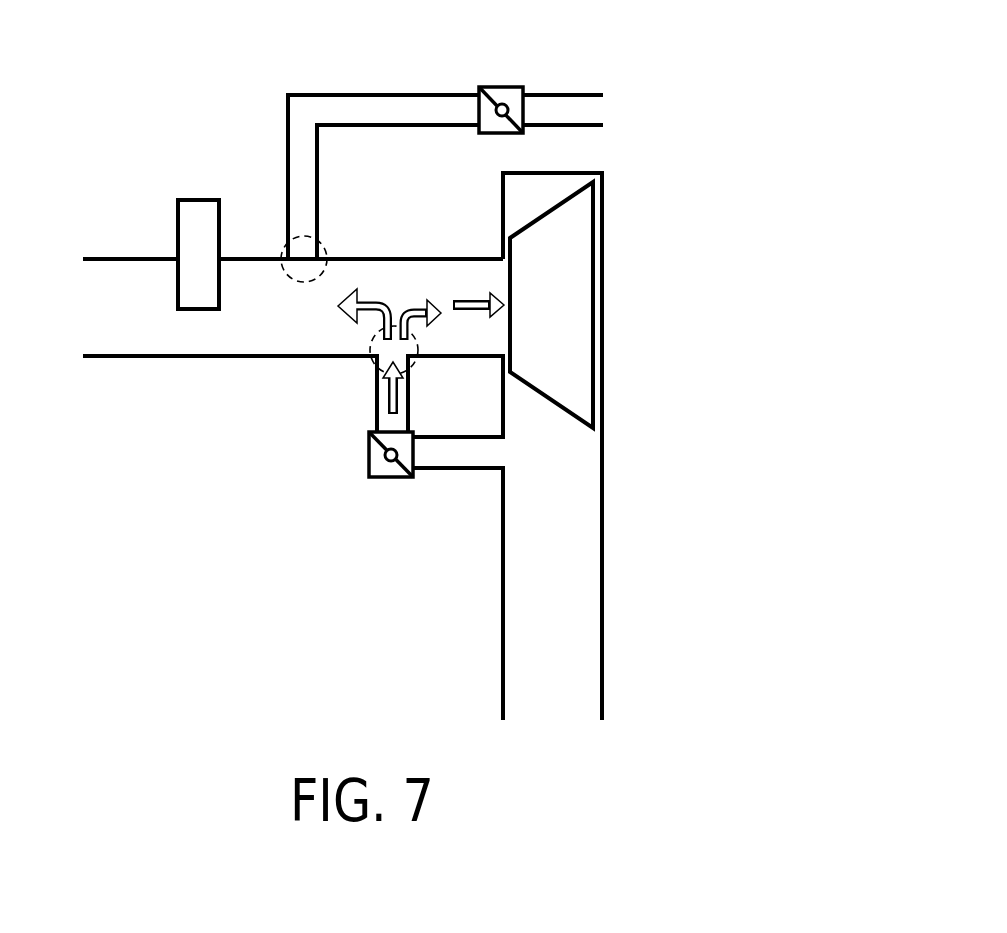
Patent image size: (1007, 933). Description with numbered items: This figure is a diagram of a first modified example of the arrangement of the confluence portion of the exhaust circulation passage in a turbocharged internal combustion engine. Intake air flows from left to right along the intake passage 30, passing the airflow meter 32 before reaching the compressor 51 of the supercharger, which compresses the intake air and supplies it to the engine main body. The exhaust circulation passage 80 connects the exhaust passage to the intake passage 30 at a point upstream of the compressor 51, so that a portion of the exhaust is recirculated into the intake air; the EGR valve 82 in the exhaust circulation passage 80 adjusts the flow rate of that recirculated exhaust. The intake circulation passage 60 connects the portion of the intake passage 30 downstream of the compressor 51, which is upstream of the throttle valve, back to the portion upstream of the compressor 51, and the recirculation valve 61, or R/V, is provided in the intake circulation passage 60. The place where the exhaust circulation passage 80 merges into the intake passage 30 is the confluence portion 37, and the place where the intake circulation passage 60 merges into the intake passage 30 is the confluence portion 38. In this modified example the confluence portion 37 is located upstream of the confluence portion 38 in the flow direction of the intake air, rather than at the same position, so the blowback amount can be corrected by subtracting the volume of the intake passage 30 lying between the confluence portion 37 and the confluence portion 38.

The intake passage 30 is at (120, 258).
The airflow meter 32 is at (198, 200).
The confluence portion 37 is at (327, 250).
The confluence portion 38 is at (372, 367).
The compressor 51 is at (593, 295).
The intake circulation passage 60 is at (460, 470).
The recirculation valve 61 is at (370, 460).
The exhaust circulation passage 80 is at (395, 93).
The EGR valve 82 is at (504, 96).